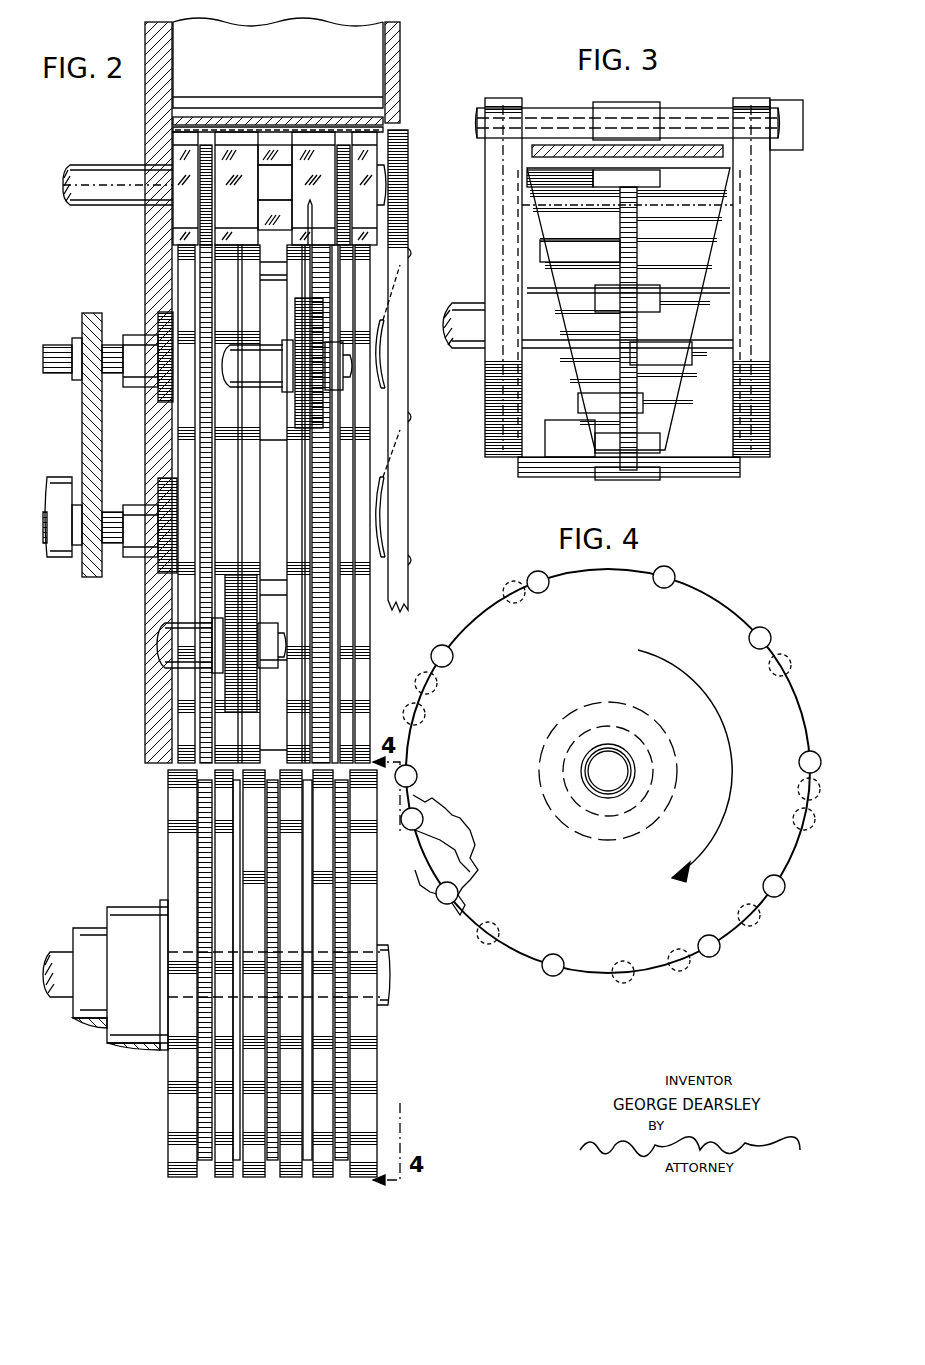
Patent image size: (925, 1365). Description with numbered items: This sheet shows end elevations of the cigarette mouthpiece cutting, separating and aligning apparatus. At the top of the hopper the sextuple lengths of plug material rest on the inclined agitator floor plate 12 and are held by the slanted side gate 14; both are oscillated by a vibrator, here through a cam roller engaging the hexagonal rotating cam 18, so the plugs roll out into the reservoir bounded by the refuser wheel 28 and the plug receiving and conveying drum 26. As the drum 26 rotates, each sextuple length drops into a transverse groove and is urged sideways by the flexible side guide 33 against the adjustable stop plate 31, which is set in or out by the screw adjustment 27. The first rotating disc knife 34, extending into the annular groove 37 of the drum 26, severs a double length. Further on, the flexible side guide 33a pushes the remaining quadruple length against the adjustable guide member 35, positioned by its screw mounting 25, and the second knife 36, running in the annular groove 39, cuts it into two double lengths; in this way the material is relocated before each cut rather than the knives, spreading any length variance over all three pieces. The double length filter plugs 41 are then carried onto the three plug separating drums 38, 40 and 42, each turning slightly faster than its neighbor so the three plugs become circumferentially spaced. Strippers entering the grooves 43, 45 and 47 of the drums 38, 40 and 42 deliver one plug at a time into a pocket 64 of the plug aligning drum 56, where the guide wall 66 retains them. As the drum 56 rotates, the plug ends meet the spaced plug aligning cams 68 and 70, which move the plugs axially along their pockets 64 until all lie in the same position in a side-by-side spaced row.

In FIG. 2, the inclined floor plate 12 is at (367, 118).
In FIG. 2, the slanted side gate 14 is at (365, 57).
In FIG. 2, the hexagonal rotating cam 18 is at (268, 155).
In FIG. 2, the screw adjustment 25 is at (72, 547).
In FIG. 2, the plug receiving and conveying drum 26 is at (372, 398).
In FIG. 2, the screw adjustment 27 is at (80, 358).
In FIG. 2, the refuser wheel 28 is at (183, 207).
In FIG. 2, the adjustable stop plate 31 is at (163, 360).
In FIG. 2, the flexible side guide 33 is at (378, 375).
In FIG. 2, the flexible side guide 33a is at (377, 557).
In FIG. 2, the first rotating disc knife 34 is at (311, 217).
In FIG. 2, the adjustable guide member 35 is at (165, 518).
In FIG. 2, the second knife 36 is at (240, 543).
In FIG. 2, the annular groove 37 is at (302, 548).
In FIG. 2, the plug separating drum 38 is at (358, 1045).
In FIG. 4, the plug separating drum 38 is at (482, 648).
In FIG. 2, the annular groove 39 is at (246, 390).
In FIG. 2, the plug separating drum 40 is at (285, 943).
In FIG. 4, the plug separating drum 40 is at (763, 648).
In FIG. 3, the double length filter plug 41 is at (630, 463).
In FIG. 2, the plug separating drum 42 is at (185, 847).
In FIG. 4, the plug separating drum 42 is at (774, 657).
In FIG. 2, the groove 43 is at (343, 1078).
In FIG. 2, the groove 45 is at (266, 1041).
In FIG. 2, the groove 47 is at (200, 1110).
In FIG. 3, the plug aligning drum 56 is at (695, 270).
In FIG. 3, the pocket 64 is at (687, 290).
In FIG. 3, the guide wall 66 is at (688, 145).
In FIG. 3, the plug aligning cam 68 is at (708, 430).
In FIG. 3, the plug aligning cam 70 is at (555, 435).